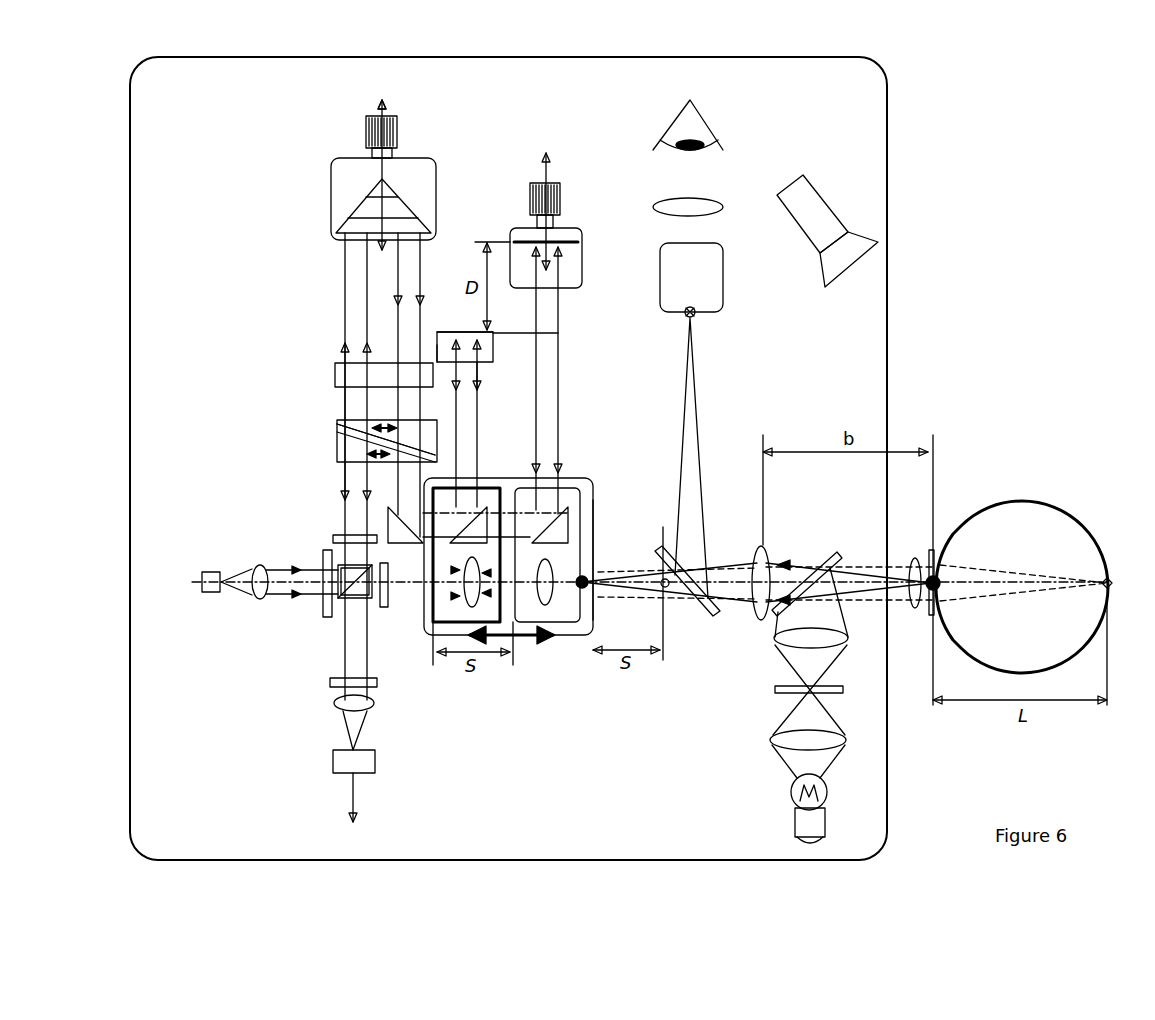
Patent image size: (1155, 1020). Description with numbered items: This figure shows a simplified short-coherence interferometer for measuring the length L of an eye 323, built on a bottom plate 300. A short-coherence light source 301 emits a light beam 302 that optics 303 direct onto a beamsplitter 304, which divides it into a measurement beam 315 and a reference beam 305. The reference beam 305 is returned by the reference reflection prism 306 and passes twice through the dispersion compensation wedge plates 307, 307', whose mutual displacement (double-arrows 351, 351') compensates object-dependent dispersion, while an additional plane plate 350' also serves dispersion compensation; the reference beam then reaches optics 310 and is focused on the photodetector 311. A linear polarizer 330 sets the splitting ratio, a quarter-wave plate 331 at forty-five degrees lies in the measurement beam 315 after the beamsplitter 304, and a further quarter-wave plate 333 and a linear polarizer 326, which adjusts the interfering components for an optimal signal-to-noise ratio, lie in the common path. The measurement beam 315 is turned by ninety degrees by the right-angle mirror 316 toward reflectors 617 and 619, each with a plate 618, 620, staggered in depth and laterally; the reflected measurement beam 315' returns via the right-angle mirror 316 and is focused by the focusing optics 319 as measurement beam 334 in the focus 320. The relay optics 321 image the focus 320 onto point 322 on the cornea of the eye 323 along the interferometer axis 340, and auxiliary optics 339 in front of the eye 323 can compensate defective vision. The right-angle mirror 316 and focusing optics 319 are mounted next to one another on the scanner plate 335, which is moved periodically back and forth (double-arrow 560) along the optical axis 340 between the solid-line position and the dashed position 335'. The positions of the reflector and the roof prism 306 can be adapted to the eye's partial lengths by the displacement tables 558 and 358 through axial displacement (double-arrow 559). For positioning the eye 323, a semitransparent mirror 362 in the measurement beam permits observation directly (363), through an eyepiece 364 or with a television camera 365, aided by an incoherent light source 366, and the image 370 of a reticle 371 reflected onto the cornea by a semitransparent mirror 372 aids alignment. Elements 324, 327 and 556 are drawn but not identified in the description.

The bottom plate 300 is at (872, 105).
The short-coherence light source 301 is at (205, 573).
The light beam 302 is at (246, 576).
The optics 303 is at (257, 565).
The beamsplitter 304 is at (337, 575).
The reference beam 305 is at (343, 343).
The reference reflection prism 306 is at (355, 205).
The dispersion compensation wedge plate 307 is at (359, 398).
The dispersion compensation wedge plate 307' is at (360, 441).
The optics 310 is at (340, 710).
The photodetector 311 is at (335, 765).
The measurement beam 315 is at (388, 322).
The reflected measurement beam 315' is at (504, 377).
The right-angle mirror 316 is at (460, 566).
The focusing optics 319 is at (481, 566).
The focus 320 is at (590, 578).
The relay optics 321 is at (758, 548).
The point 322 is at (947, 545).
The eye 323 is at (1048, 515).
The measuring light direction 324 is at (780, 560).
The linear polarizer 326 is at (330, 683).
The aperture 327 is at (660, 587).
The linear polarizer 330 is at (320, 603).
The quarter-wave plate 331 is at (331, 540).
The quarter-wave plate 333 is at (385, 607).
The measurement beam 334 is at (468, 559).
The scanner plate 335 is at (485, 575).
The scanner plate position 335' is at (594, 603).
The auxiliary optics 339 is at (916, 610).
The interferometer axis 340 is at (1117, 580).
The plane plate 350' is at (358, 376).
The double-arrow 351 is at (340, 415).
The double-arrow 351' is at (336, 464).
The displacement table 358 is at (357, 175).
The semitransparent mirror 362 is at (712, 614).
The direct observation 363 is at (712, 128).
The eyepiece 364 is at (705, 198).
The television camera 365 is at (698, 268).
The incoherent light source 366 is at (807, 178).
The reticle image 370 is at (929, 553).
The reticle 371 is at (845, 690).
The semitransparent mirror 372 is at (833, 553).
The second slide 556 is at (560, 636).
The displacement table 558 is at (365, 128).
The double-arrow 559 is at (546, 150).
The double-arrow 560 is at (470, 636).
The reflector 617 is at (580, 243).
The plate 618 is at (573, 283).
The reflector 619 is at (437, 330).
The plate 620 is at (442, 341).